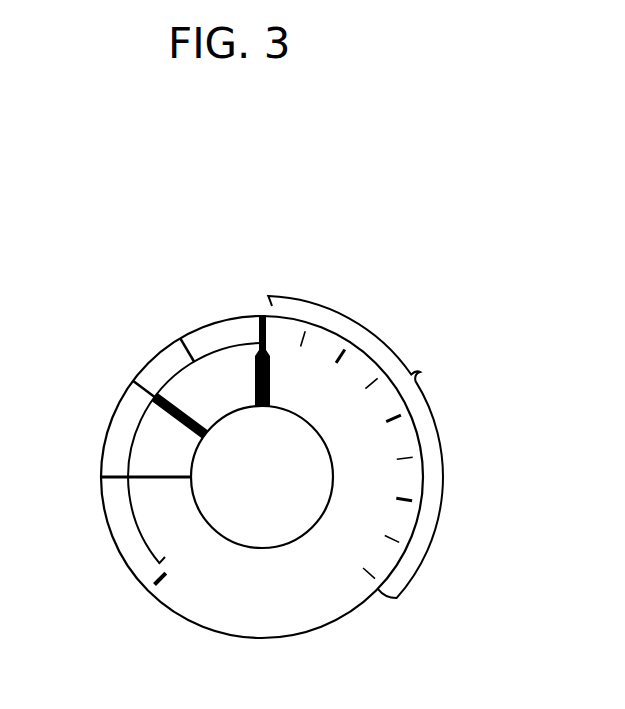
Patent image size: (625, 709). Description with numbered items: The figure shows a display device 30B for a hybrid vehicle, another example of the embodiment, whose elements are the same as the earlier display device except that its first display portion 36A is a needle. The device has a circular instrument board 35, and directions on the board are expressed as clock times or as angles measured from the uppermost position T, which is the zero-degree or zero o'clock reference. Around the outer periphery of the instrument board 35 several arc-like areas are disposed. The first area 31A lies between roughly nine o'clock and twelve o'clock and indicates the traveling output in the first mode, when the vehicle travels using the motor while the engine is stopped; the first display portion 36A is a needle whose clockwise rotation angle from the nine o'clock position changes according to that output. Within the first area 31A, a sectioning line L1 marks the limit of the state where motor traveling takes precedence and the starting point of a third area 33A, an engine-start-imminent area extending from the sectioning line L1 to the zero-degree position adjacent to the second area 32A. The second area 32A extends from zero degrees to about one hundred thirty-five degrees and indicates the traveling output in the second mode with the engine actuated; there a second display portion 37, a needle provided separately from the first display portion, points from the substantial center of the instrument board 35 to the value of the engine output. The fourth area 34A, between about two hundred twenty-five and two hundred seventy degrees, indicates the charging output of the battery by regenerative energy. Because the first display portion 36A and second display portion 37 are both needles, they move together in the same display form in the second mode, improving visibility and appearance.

The display device 30B is at (291, 485).
The circular instrument board 35 is at (182, 597).
The first area 31A is at (150, 397).
The third area 33A is at (180, 297).
The sectioning line L1 is at (185, 352).
The first display portion 36A is at (136, 408).
The fourth area 34A is at (97, 480).
The second area 32A is at (371, 447).
The second display portion 37 is at (272, 385).
The uppermost position T is at (265, 296).